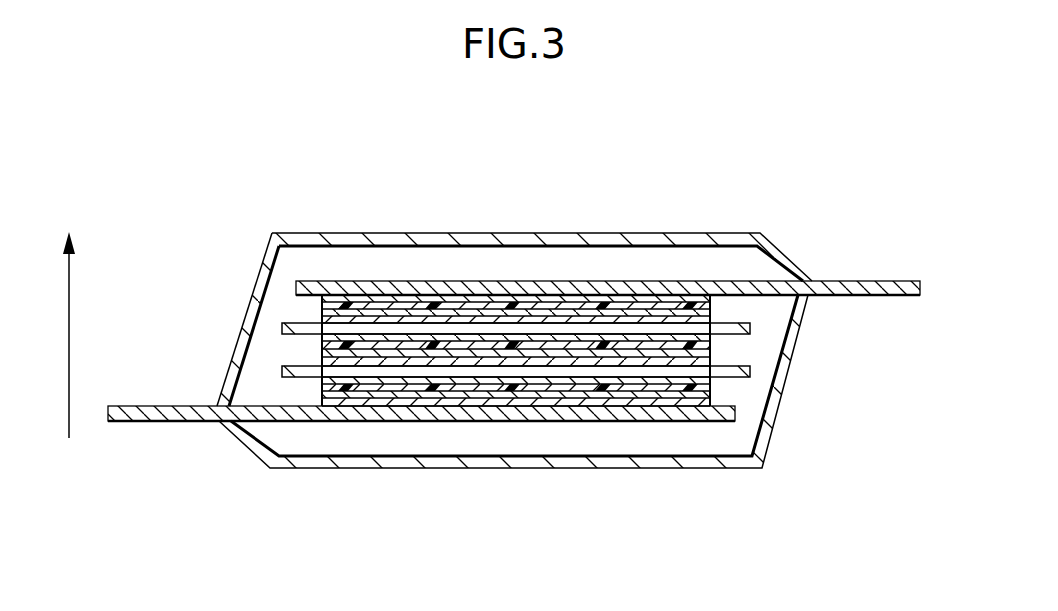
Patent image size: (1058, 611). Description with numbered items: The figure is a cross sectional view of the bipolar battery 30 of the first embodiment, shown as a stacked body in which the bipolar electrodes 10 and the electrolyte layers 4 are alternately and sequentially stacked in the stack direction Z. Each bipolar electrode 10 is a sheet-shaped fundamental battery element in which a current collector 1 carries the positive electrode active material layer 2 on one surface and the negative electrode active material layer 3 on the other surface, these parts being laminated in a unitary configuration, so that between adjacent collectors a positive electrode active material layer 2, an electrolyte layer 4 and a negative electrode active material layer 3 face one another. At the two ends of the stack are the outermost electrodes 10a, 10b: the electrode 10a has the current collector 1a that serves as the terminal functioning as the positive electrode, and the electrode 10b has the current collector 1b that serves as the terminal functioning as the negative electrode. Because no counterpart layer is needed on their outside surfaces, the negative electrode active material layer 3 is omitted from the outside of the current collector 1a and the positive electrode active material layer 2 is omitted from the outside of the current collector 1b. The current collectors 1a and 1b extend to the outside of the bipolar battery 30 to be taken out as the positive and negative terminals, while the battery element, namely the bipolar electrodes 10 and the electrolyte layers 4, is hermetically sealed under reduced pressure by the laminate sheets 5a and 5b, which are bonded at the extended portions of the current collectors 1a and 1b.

The bipolar battery 30 is at (322, 168).
The bipolar electrode 10 is at (853, 322).
The outermost electrode 10a is at (498, 173).
The outermost electrode 10b is at (752, 537).
The current collector 1 is at (752, 372).
The current collector 1a is at (467, 290).
The current collector 1b is at (437, 422).
The positive electrode active material layer 2 is at (418, 298).
The negative electrode active material layer 3 is at (697, 402).
The electrolyte layer 4 is at (712, 398).
The laminate sheet 5a is at (678, 233).
The laminate sheet 5b is at (343, 470).